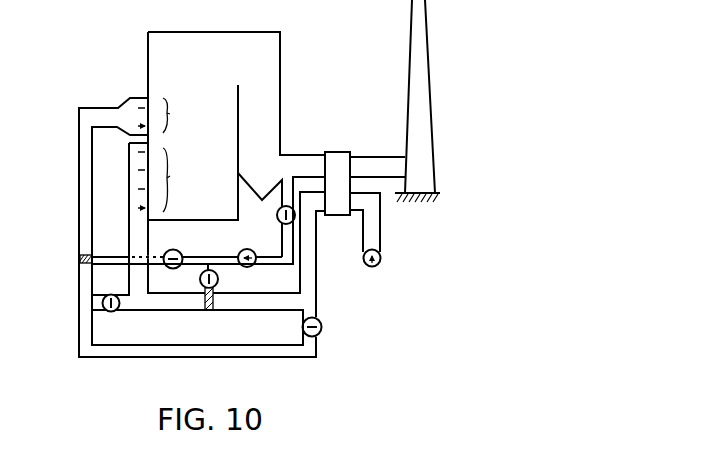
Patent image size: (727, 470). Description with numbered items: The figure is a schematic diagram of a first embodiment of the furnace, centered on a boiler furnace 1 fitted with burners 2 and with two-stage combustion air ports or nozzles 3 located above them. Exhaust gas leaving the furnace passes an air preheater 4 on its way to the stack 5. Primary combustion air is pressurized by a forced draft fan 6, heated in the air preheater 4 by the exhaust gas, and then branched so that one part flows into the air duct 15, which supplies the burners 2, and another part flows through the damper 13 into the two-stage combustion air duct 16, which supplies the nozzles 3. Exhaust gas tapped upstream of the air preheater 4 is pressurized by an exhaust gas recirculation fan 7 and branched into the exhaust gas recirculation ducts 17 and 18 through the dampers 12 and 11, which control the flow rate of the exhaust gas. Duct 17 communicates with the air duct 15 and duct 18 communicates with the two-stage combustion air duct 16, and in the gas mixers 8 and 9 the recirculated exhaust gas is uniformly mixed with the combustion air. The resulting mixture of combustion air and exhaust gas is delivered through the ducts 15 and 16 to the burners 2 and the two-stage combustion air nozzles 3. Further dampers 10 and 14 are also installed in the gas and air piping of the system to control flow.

The boiler furnace 1 is at (199, 37).
The burners 2 is at (170, 176).
The two-stage combustion air ports or nozzles 3 is at (170, 114).
The air preheater 4 is at (331, 152).
The stack 5 is at (407, 52).
The forced draft fan 6 is at (384, 258).
The exhaust gas recirculation fan 7 is at (248, 249).
The gas mixer 8 is at (208, 310).
The gas mixer 9 is at (79, 259).
The damper 10 is at (277, 214).
The damper 11 is at (176, 250).
The damper 12 is at (218, 277).
The damper 13 is at (323, 326).
The damper 14 is at (113, 312).
The duct for supplying combustion air to the burners 15 is at (129, 219).
The duct for supplying two-stage combustion air to the nozzles 16 is at (79, 225).
The exhaust gas recirculation duct 17 is at (200, 281).
The exhaust gas recirculation duct 18 is at (111, 294).